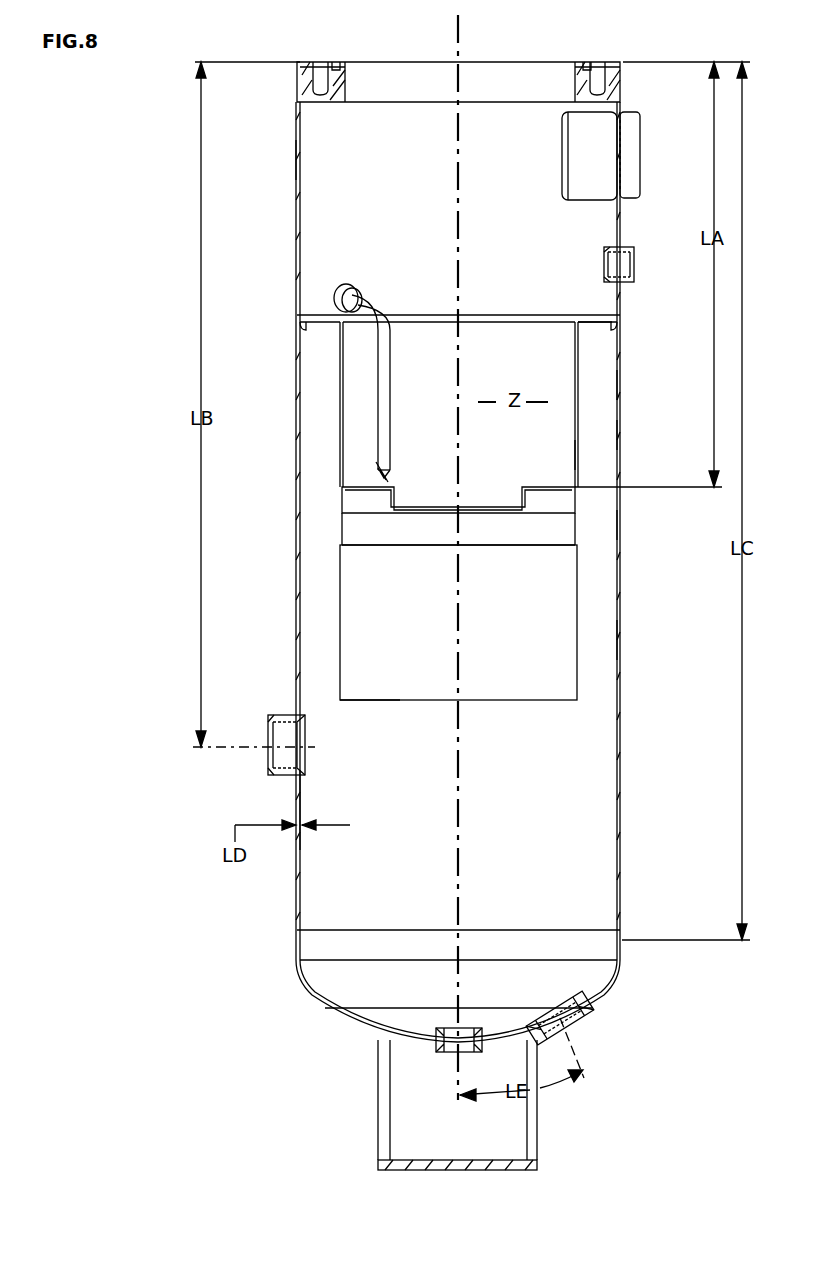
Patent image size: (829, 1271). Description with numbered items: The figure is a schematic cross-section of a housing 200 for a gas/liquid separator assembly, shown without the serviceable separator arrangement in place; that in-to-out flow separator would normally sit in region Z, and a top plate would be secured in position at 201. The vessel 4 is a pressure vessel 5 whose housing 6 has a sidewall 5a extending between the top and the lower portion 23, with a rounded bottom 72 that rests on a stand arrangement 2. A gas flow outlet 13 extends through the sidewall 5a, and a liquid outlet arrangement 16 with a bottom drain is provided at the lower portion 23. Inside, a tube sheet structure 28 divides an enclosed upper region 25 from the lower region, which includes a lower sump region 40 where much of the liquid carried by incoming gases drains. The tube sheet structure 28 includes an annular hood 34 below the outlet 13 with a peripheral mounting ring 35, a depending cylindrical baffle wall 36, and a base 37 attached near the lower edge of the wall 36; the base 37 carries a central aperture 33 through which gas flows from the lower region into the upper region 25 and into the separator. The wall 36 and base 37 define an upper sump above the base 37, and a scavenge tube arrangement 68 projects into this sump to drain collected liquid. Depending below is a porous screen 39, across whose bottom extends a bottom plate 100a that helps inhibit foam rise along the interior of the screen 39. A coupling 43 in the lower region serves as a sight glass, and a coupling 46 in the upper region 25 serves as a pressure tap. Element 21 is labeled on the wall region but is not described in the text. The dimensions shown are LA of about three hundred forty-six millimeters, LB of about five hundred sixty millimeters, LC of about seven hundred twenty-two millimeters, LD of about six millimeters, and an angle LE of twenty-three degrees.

The housing 200 is at (156, 500).
The top plate location 201 is at (590, 65).
The stand arrangement 2 is at (538, 1126).
The vessel 4 is at (620, 650).
The pressure vessel 5 is at (620, 430).
The pressure vessel sidewall 5a is at (620, 522).
The housing 6 is at (620, 380).
The gas flow outlet 13 is at (572, 166).
The liquid outlet arrangement 16 is at (565, 1005).
The outer wall 21 is at (300, 214).
The lower portion 23 is at (338, 1016).
The enclosed upper region 25 is at (318, 153).
The tube sheet structure 28 is at (578, 451).
The central aperture 33 is at (418, 497).
The annular cover or hood 34 is at (590, 322).
The peripheral mounting ring 35 is at (612, 320).
The depending central baffle wall 36 is at (578, 396).
The bottom plate or base 37 is at (366, 487).
The porous screen 39 is at (578, 598).
The lower sump region 40 is at (316, 992).
The coupling 43 is at (280, 778).
The coupling 46 is at (619, 247).
The scavenge tube arrangement 68 is at (386, 374).
The rounded bottom 72 is at (396, 1045).
The bottom plate 100a is at (358, 702).